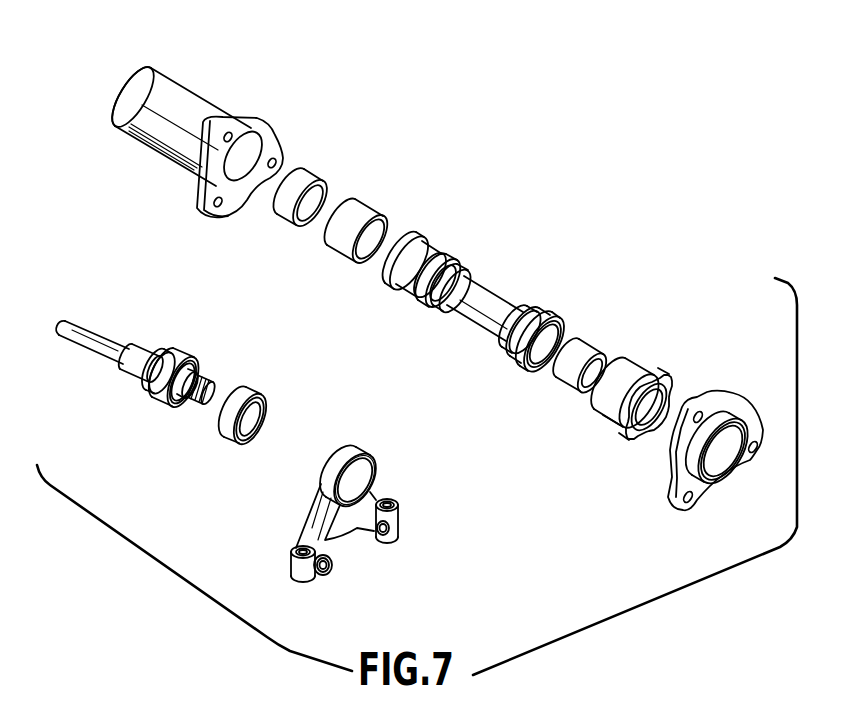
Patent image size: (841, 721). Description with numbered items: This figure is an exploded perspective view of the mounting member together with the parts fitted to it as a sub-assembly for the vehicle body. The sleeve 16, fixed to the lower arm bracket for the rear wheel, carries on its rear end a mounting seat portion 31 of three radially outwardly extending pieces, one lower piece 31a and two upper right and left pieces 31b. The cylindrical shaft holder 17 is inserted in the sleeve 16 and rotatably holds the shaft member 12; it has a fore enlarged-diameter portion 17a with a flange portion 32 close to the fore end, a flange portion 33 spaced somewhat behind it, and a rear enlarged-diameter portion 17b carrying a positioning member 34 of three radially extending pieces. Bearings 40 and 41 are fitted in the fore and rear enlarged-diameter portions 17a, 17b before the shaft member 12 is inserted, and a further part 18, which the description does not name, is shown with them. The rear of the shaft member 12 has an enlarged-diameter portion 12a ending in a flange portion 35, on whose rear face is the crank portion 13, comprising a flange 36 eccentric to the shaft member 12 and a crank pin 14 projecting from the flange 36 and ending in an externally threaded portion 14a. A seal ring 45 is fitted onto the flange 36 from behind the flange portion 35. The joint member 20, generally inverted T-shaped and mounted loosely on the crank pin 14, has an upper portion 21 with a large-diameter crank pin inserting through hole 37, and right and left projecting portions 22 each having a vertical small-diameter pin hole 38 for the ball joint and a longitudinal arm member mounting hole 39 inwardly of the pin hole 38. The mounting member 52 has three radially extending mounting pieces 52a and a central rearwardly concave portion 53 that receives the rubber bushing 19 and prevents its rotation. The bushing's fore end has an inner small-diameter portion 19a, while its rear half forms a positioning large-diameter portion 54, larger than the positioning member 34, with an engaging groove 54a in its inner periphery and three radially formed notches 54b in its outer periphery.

The shaft member 12 is at (102, 355).
The enlarged-diameter portion 12a is at (148, 351).
The crank portion 13 is at (183, 352).
The crank pin 14 is at (197, 370).
The externally threaded portion 14a is at (187, 408).
The sleeve 16 is at (158, 92).
The shaft holder 17 is at (484, 295).
The fore enlarged-diameter portion 17a is at (413, 297).
The rear enlarged-diameter portion 17b is at (520, 316).
The bushing 18 is at (357, 210).
The rubber bushing 19 is at (628, 358).
The small-diameter portion 19a is at (606, 408).
The joint member 20 is at (339, 509).
The upper portion 21 is at (350, 450).
The projecting portions 22 is at (292, 573).
The mounting seat portion 31 is at (267, 120).
The lower piece 31a is at (198, 210).
The upper right and left pieces 31b is at (218, 117).
The flange portion 32 is at (412, 246).
The flange portion 33 is at (432, 308).
The positioning member 34 is at (553, 318).
The flange portion 35 is at (152, 394).
The flange 36 is at (176, 405).
The crank pin inserting through hole 37 is at (375, 472).
The pin hole 38 is at (300, 547).
The arm member mounting hole 39 is at (383, 537).
The bearing 40 is at (302, 182).
The bearing 41 is at (567, 387).
The seal ring 45 is at (250, 392).
The mounting member 52 is at (745, 393).
The mounting pieces 52a is at (682, 513).
The concave portion 53 is at (725, 482).
The positioning large-diameter portion 54 is at (658, 373).
The engaging groove 54a is at (660, 403).
The notches 54b is at (633, 437).